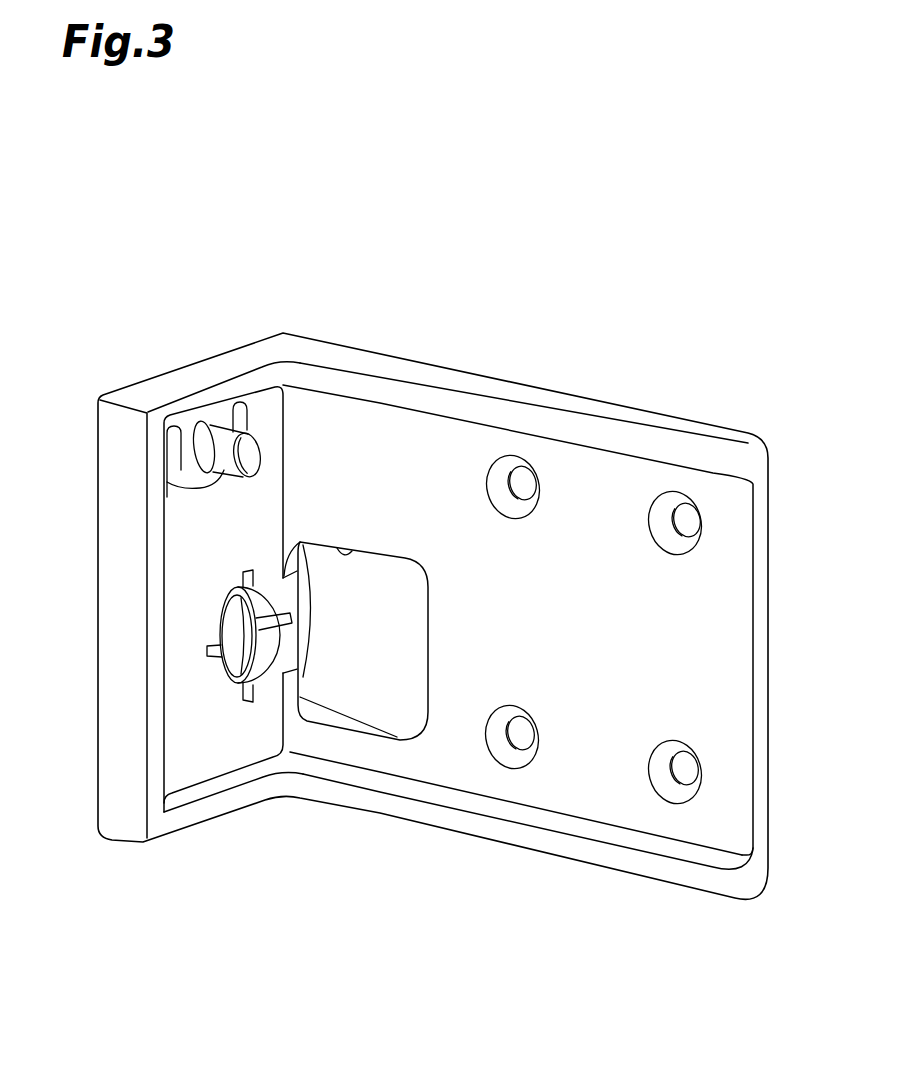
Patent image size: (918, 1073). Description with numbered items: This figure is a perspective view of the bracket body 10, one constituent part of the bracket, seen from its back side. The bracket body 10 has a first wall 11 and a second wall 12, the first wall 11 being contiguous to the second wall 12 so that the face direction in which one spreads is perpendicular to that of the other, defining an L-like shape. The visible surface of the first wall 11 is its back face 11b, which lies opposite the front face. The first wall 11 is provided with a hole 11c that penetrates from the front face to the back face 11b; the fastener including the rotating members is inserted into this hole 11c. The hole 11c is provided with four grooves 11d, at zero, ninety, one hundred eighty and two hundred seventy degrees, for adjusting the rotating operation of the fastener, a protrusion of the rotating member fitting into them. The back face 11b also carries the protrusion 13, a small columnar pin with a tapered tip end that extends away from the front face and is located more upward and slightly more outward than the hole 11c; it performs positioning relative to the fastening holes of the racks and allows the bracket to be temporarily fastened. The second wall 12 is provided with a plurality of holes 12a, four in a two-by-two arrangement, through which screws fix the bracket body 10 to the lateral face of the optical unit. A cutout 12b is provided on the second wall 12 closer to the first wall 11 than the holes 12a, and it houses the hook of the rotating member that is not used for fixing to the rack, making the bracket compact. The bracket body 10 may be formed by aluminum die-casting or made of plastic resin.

The bracket body 10 is at (421, 319).
The first wall 11 is at (188, 767).
The back face 11b is at (193, 567).
The hole 11c is at (254, 667).
The grooves 11d is at (245, 582).
The second wall 12 is at (735, 650).
The holes 12a is at (504, 467).
The cutout 12b is at (353, 553).
The protrusion 13 is at (245, 432).